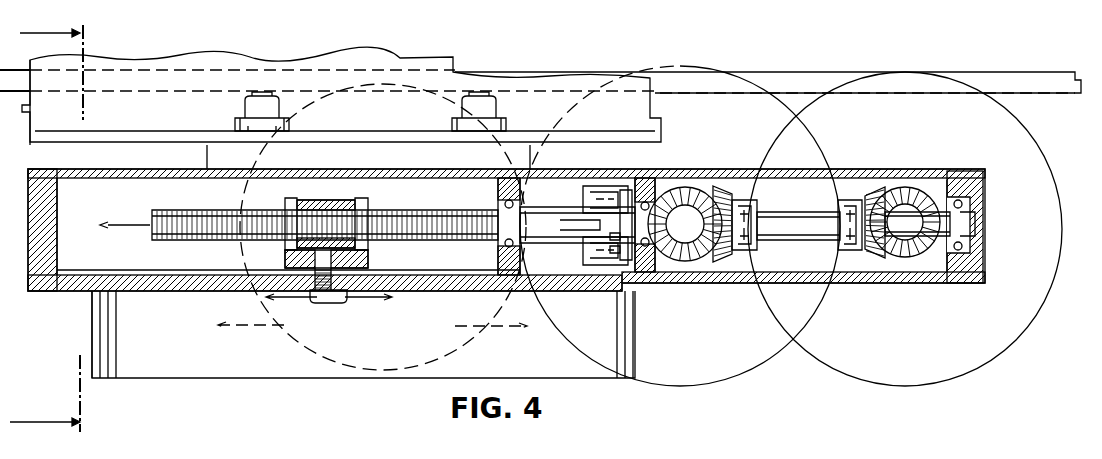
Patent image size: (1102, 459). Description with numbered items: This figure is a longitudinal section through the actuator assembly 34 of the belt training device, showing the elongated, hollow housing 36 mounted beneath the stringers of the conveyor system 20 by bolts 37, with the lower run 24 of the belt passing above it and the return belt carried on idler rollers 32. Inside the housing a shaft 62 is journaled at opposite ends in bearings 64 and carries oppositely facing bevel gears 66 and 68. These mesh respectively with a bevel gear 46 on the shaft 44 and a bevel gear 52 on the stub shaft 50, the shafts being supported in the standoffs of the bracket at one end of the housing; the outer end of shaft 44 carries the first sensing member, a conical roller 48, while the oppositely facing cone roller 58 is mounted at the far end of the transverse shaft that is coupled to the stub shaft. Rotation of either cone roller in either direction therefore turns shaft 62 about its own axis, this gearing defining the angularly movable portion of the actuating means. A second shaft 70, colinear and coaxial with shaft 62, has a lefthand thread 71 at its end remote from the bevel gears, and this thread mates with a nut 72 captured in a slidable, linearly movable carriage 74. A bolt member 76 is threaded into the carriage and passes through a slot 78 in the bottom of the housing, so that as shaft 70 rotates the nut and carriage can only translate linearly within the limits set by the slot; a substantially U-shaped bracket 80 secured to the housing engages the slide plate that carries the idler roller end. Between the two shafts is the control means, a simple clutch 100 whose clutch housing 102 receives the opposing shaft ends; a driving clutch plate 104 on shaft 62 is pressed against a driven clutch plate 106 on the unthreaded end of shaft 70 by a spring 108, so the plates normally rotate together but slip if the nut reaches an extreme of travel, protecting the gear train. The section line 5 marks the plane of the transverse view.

The section line 5— 5 is at (46, 218).
The conveyor system 20 is at (45, 113).
The lower run 24 is at (1040, 80).
The idler rollers 32 is at (340, 362).
The mounting bracket 34 is at (284, 392).
The housing 36 is at (702, 284).
The bolts 37 is at (243, 108).
The shaft 44 is at (898, 192).
The bevel gear 46 is at (920, 202).
The conical roller 48 is at (898, 72).
The stub shaft 50 is at (683, 190).
The bevel gear 52 is at (717, 186).
The cone roller 58 is at (708, 68).
The shaft 62 is at (780, 236).
The bearings 64 is at (648, 270).
The bevel gear 66 is at (876, 260).
The bevel gear 68 is at (720, 266).
The second shaft 70 is at (178, 240).
The lefthand thread 71 is at (162, 212).
The nut 72 is at (340, 205).
The carriage 74 is at (360, 256).
The bolt member 76 is at (323, 304).
The slot 78 is at (192, 271).
The U-shaped bracket 80 is at (172, 375).
The clutch 100 is at (608, 180).
The clutch housing 102 is at (583, 253).
The driving clutch plate 104 is at (615, 242).
The driven clutch plate 106 is at (614, 252).
The spring 108 is at (583, 191).